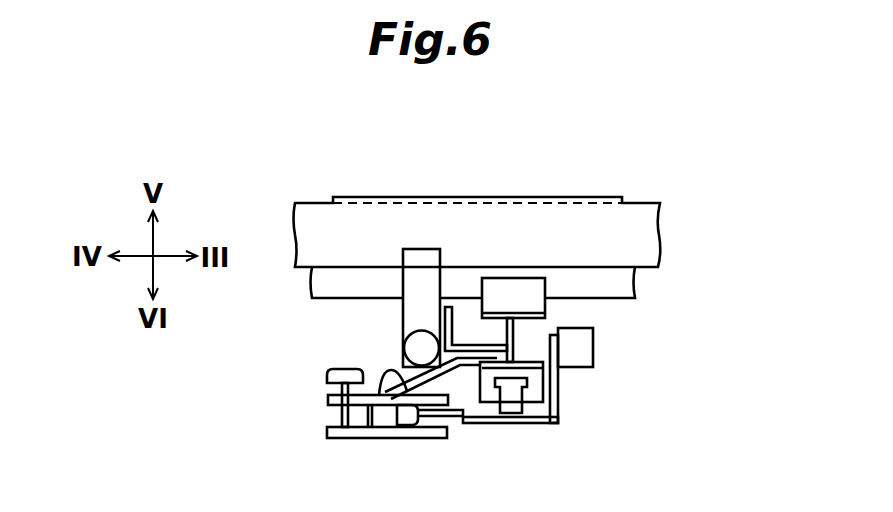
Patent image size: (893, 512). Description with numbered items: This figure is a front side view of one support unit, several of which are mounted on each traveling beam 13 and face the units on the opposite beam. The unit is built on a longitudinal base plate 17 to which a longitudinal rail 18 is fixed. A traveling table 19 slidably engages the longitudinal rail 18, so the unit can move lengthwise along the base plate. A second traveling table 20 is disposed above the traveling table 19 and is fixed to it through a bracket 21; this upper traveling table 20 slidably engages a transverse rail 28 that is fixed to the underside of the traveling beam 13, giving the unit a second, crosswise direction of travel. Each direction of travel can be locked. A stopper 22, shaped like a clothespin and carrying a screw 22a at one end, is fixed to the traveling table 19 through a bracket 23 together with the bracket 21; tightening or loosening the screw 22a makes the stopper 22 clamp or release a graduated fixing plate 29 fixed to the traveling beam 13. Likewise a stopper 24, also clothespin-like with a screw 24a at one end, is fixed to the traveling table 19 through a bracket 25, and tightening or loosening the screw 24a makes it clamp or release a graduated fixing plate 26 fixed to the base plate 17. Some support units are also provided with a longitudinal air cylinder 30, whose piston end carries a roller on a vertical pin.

The traveling beam 13 is at (638, 223).
The graduated fixing plate 29 is at (462, 226).
The transverse rail 28 is at (617, 285).
The stopper 22 is at (420, 268).
The screw 22a is at (418, 352).
The traveling table 20 is at (510, 295).
The bracket 21 is at (510, 338).
The bracket 23 is at (470, 337).
The longitudinal air cylinder 30 is at (578, 345).
The traveling table 19 is at (535, 382).
The longitudinal rail 18 is at (510, 400).
The longitudinal base plate 17 is at (535, 420).
The graduated fixing plate 26 is at (453, 418).
The stopper 24 is at (357, 432).
The screw 24a is at (325, 378).
The bracket 25 is at (380, 397).